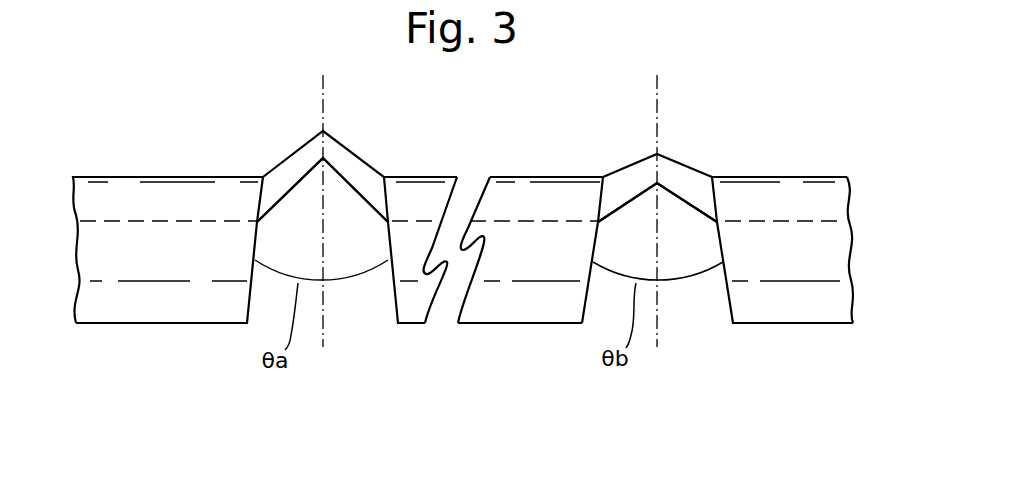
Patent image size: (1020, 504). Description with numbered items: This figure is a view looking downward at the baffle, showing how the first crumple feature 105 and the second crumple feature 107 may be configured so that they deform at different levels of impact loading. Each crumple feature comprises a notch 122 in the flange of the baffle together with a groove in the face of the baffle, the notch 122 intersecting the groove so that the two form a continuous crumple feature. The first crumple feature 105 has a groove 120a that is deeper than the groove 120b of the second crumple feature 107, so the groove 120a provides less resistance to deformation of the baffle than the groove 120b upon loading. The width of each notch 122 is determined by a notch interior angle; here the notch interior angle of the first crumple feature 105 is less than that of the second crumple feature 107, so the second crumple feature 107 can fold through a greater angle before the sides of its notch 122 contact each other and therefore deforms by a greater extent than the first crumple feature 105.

The first crumple feature 105 is at (283, 146).
The second crumple feature 107 is at (749, 146).
The groove 120a is at (333, 200).
The groove 120b is at (645, 208).
The notch 122 is at (339, 306).